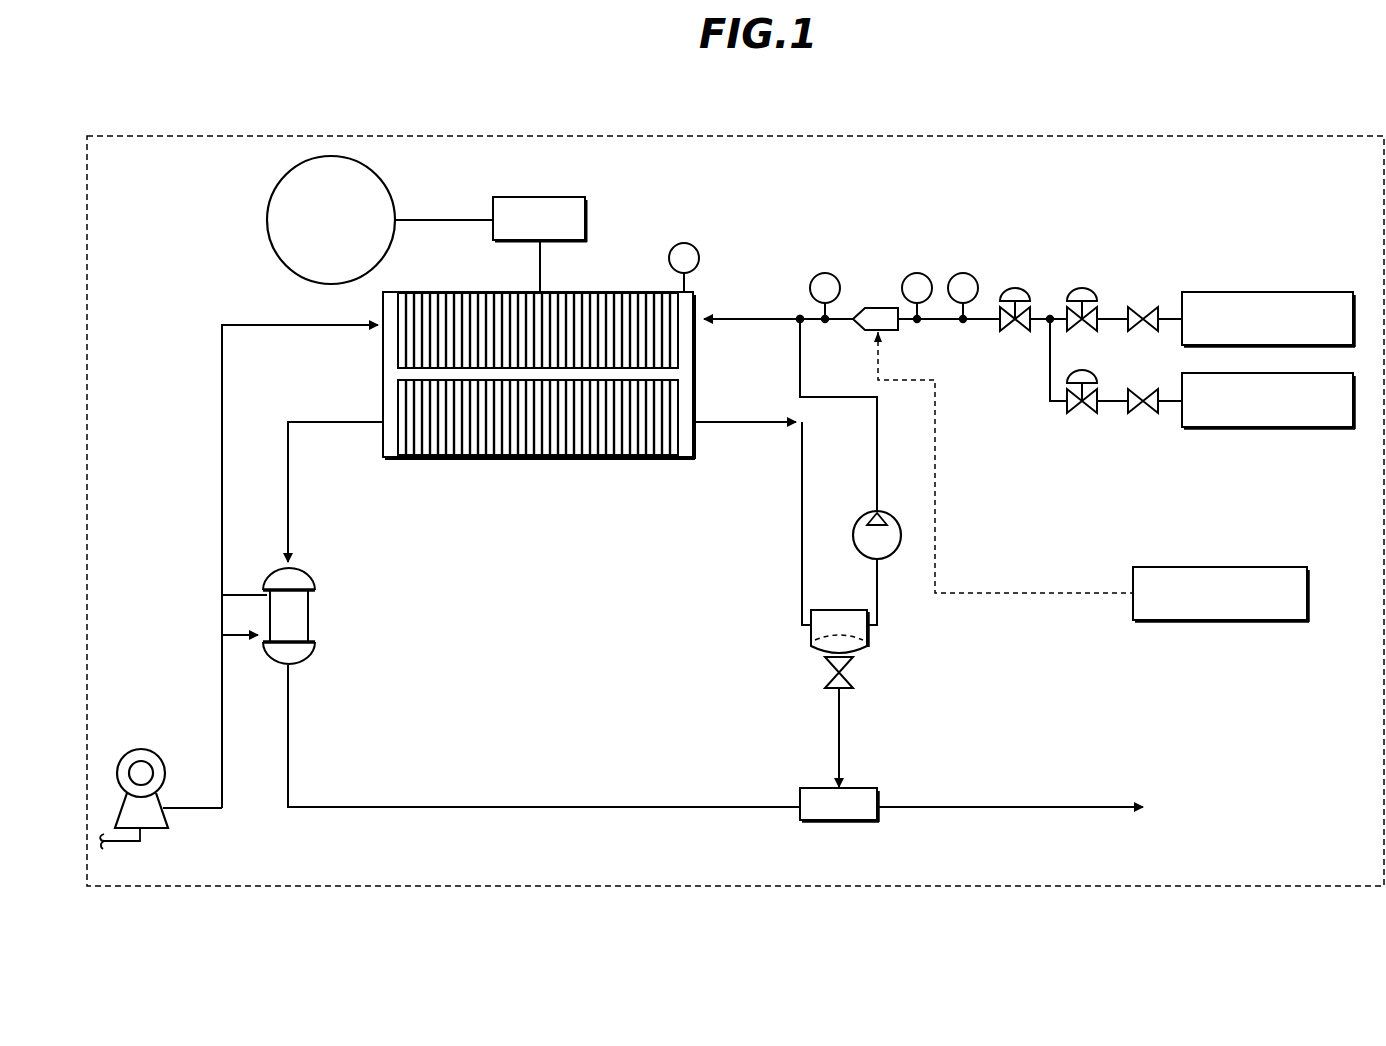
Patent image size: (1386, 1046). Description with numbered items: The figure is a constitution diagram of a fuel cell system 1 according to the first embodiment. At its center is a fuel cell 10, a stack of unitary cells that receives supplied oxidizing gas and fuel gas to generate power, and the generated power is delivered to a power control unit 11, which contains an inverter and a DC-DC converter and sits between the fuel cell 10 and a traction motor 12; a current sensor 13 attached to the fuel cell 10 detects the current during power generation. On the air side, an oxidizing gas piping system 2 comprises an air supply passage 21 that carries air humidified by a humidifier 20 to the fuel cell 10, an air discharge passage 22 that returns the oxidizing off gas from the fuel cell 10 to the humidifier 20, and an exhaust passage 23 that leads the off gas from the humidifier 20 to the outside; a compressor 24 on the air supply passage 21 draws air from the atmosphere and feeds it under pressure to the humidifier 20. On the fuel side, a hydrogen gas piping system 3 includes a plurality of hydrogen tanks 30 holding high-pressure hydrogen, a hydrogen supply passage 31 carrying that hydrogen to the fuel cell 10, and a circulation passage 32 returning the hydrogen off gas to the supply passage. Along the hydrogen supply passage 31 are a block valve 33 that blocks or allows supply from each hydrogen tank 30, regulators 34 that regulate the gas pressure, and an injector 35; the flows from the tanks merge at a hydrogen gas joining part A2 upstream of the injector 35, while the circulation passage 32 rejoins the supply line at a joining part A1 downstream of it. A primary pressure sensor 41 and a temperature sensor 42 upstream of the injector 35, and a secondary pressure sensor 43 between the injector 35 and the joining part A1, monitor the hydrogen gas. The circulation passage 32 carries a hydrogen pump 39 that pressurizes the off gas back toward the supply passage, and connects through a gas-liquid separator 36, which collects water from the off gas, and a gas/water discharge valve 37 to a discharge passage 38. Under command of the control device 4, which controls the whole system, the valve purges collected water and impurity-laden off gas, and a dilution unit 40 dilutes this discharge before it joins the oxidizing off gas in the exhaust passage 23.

The fuel cell system 1 is at (598, 136).
The oxidizing gas piping system 2 is at (333, 600).
The hydrogen gas piping system 3 is at (786, 612).
The control device 4 is at (1218, 567).
The fuel cell 10 is at (641, 460).
The power control unit (PCU) 11 is at (588, 223).
The traction motor 12 is at (267, 232).
The current sensor 13 is at (688, 244).
The humidifier 20 is at (316, 622).
The air supply passage 21 is at (220, 540).
The air discharge passage 22 is at (290, 518).
The exhaust passage 23 is at (735, 803).
The compressor 24 is at (148, 750).
The hydrogen tank 30 is at (1300, 292).
The hydrogen supply passage 31 is at (752, 318).
The circulation passage 32 is at (800, 572).
The block valve 33 is at (1138, 316).
The regulator 34 is at (1013, 287).
The injector 35 is at (869, 306).
The gas-liquid separator 36 is at (823, 608).
The gas/water discharge valve 37 is at (832, 676).
The discharge passage 38 is at (841, 744).
The hydrogen pump 39 is at (865, 511).
The dilution unit 40 is at (880, 794).
The primary pressure sensor 41 is at (921, 272).
The temperature sensor 42 is at (968, 272).
The secondary pressure sensor 43 is at (830, 272).
The joining part A1 is at (797, 324).
The hydrogen gas joining part A2 is at (1048, 323).